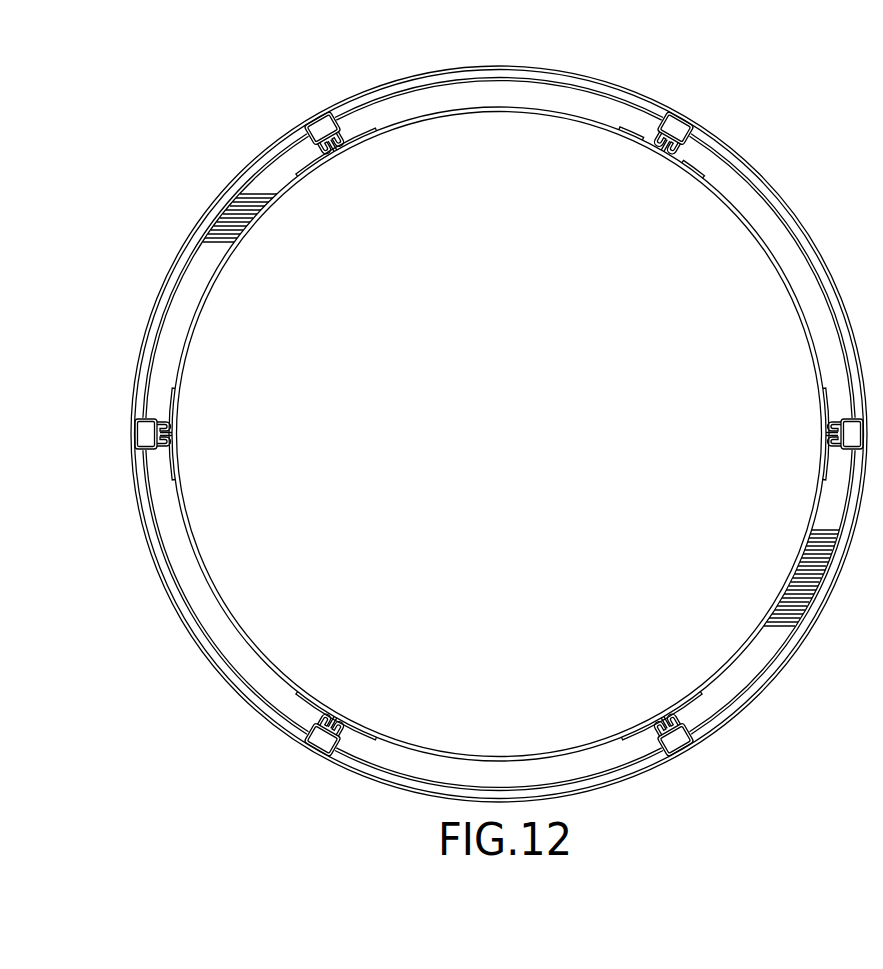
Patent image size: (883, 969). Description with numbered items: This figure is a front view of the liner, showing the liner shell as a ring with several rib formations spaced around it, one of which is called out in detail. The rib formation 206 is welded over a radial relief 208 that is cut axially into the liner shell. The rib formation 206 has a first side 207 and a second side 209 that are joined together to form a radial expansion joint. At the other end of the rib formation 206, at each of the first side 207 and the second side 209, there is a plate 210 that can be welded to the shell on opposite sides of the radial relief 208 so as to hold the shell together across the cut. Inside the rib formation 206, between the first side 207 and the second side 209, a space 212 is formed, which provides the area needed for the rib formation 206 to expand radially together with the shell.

The rib formation 206 is at (739, 137).
The first side 207 is at (647, 117).
The radial relief 208 is at (658, 153).
The second side 209 is at (688, 139).
The plate 210 is at (637, 137).
The space 212 is at (677, 137).